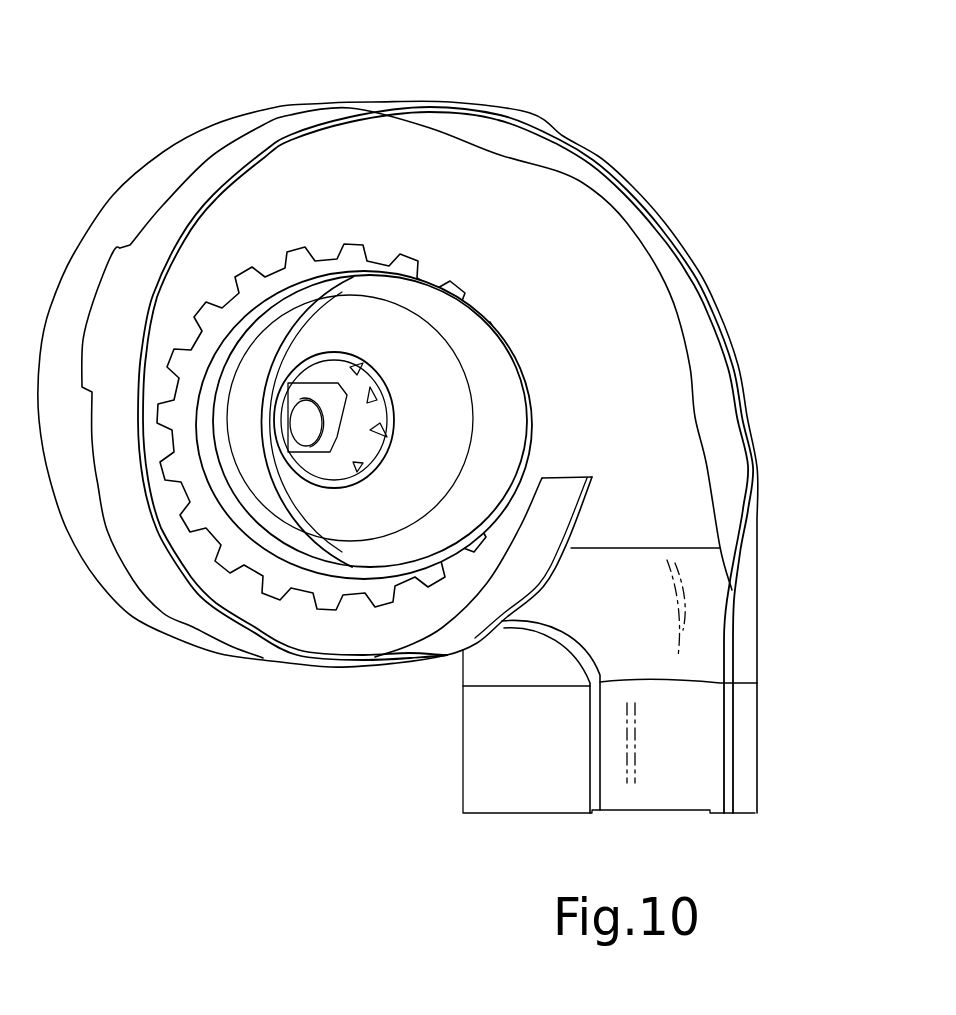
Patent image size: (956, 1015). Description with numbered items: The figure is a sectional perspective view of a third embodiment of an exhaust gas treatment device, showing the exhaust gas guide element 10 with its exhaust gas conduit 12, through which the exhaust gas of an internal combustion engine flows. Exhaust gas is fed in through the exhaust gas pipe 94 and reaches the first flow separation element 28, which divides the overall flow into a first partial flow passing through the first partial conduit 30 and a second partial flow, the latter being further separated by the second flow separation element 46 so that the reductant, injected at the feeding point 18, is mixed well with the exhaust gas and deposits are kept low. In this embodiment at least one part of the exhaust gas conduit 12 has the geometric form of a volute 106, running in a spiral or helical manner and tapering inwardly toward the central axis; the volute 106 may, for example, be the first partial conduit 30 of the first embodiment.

The exhaust gas guide element 10 is at (524, 102).
The exhaust gas conduit 12 is at (603, 185).
The feeding point 18 is at (318, 421).
The first flow separation element 28 is at (543, 384).
The first partial conduit 30 is at (666, 459).
The second flow separation element 46 is at (365, 341).
The exhaust gas pipe 94 is at (757, 750).
The volute 106 is at (324, 643).